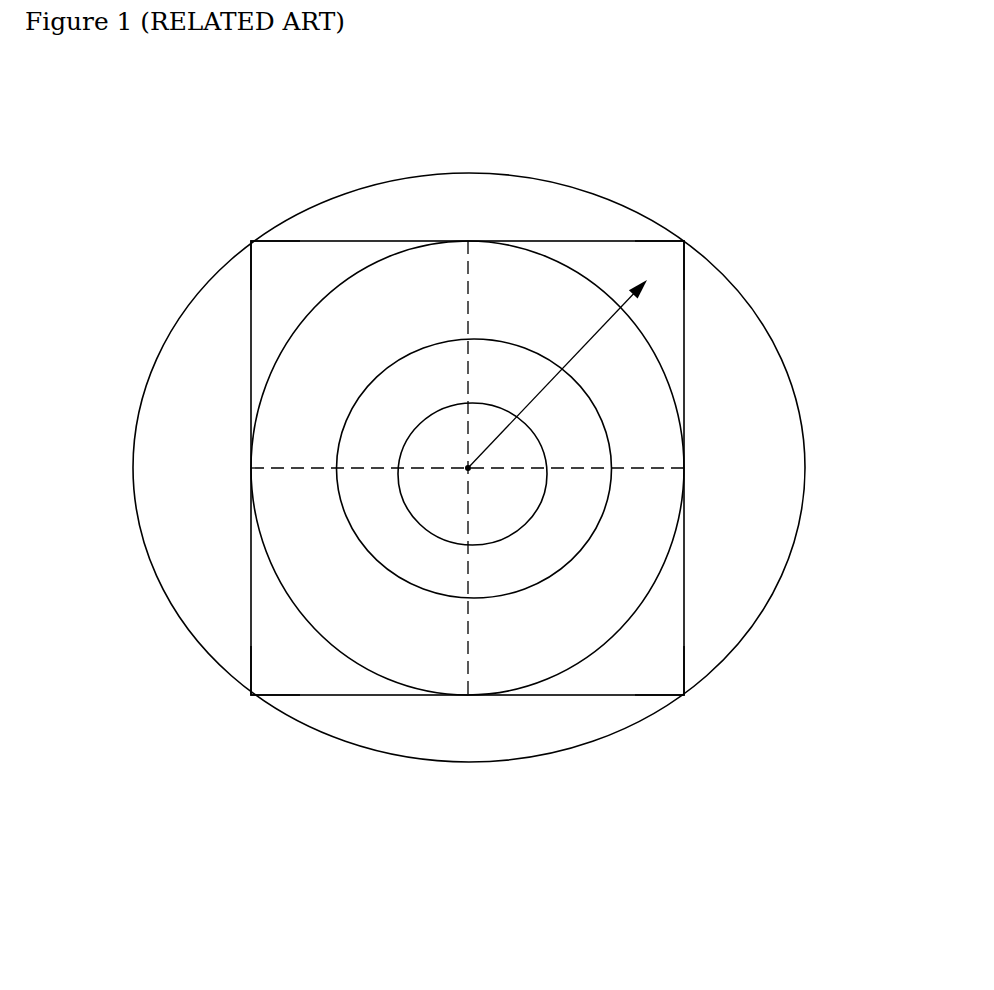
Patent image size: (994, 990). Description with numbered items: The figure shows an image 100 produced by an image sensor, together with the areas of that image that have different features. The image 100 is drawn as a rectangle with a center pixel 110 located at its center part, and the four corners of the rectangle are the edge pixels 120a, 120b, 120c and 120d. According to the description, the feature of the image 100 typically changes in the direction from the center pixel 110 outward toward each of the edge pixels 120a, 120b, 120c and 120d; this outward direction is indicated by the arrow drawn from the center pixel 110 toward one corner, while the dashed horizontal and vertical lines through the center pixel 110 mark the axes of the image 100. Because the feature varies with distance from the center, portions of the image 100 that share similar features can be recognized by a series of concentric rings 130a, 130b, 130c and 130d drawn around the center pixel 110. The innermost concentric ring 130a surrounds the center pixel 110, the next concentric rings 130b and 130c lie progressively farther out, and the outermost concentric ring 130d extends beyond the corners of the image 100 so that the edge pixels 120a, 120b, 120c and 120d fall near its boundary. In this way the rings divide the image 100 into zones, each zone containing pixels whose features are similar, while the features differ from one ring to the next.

The image 100 is at (595, 240).
The center pixel 110 is at (425, 515).
The edge pixel 120a is at (247, 245).
The edge pixel 120b is at (686, 249).
The edge pixel 120c is at (246, 687).
The edge pixel 120d is at (691, 689).
The concentric ring 130a is at (537, 512).
The concentric ring 130b is at (607, 498).
The concentric ring 130c is at (675, 398).
The concentric ring 130d is at (775, 347).